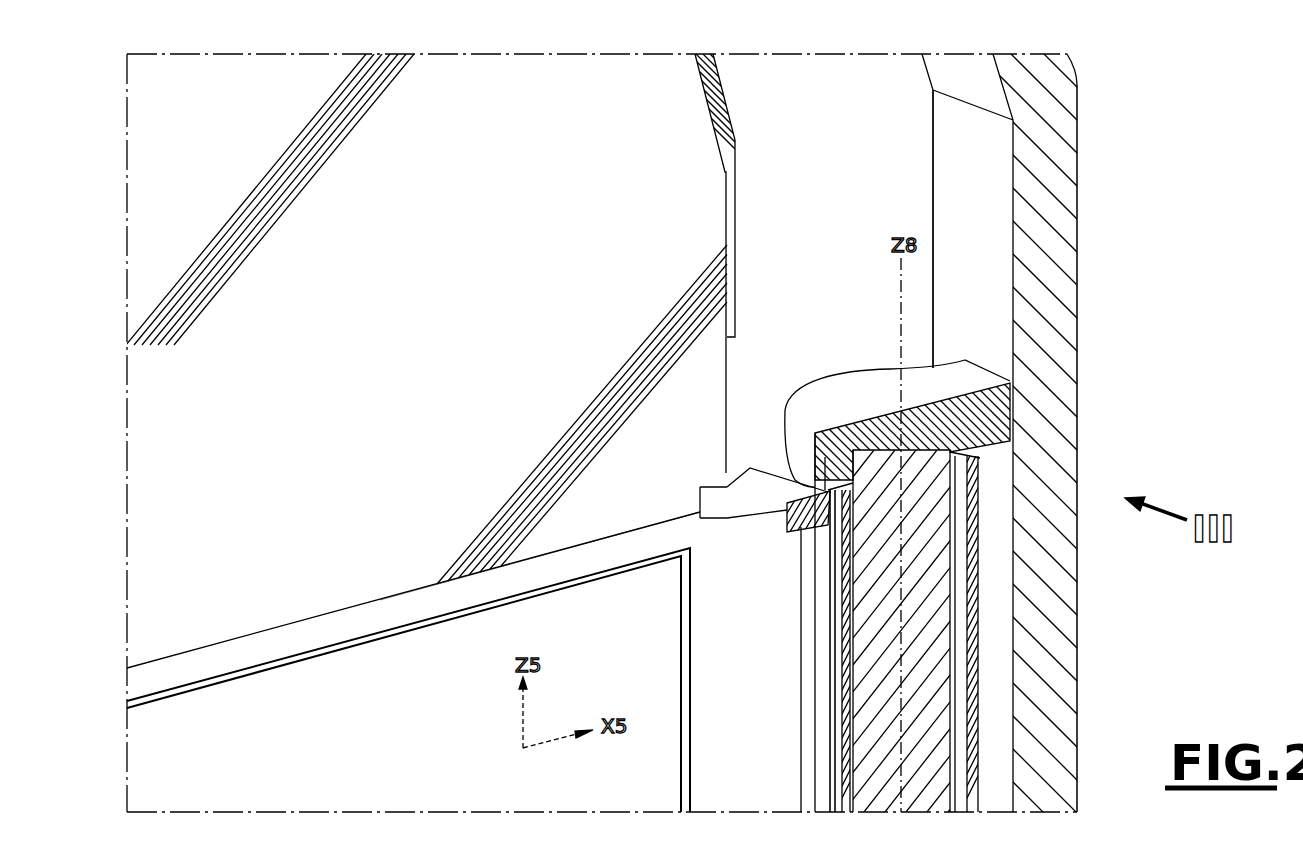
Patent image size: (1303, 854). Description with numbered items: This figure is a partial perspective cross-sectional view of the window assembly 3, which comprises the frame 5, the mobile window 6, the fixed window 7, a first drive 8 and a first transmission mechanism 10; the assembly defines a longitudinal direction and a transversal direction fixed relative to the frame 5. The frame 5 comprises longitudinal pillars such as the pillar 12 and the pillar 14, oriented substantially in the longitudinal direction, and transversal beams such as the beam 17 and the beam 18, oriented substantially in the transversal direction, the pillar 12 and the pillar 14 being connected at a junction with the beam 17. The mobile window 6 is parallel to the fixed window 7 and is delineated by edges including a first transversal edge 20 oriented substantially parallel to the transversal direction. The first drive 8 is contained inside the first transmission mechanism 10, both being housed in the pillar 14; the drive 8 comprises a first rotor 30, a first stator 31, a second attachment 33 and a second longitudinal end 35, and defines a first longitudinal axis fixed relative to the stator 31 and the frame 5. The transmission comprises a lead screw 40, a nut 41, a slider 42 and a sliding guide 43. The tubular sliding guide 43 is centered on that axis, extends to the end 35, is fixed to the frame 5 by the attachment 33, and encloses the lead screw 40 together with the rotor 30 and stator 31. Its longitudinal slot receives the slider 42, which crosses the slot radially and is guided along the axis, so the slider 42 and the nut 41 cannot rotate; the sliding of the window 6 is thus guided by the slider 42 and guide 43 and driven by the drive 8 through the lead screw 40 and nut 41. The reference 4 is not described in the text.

The window assembly 3 is at (1056, 212).
The housing 4 is at (1163, 245).
The frame 5 is at (905, 157).
The mobile window 6 is at (426, 319).
The fixed window 7 is at (408, 680).
The first drive 8 is at (926, 760).
The first transmission mechanism 10 is at (820, 747).
The longitudinal pillar 12 is at (913, 211).
The longitudinal pillar 14 is at (725, 680).
The transversal beam 17 is at (477, 568).
The transversal beam 18 is at (726, 219).
The first transversal edge 20 is at (372, 597).
The first rotor 30 is at (913, 619).
The first stator 31 is at (960, 680).
The second attachment 33 is at (1005, 383).
The second longitudinal end 35 is at (884, 392).
The lead screw 40 is at (835, 651).
The nut 41 is at (843, 579).
The slider 42 is at (790, 530).
The sliding guide 43 is at (807, 700).